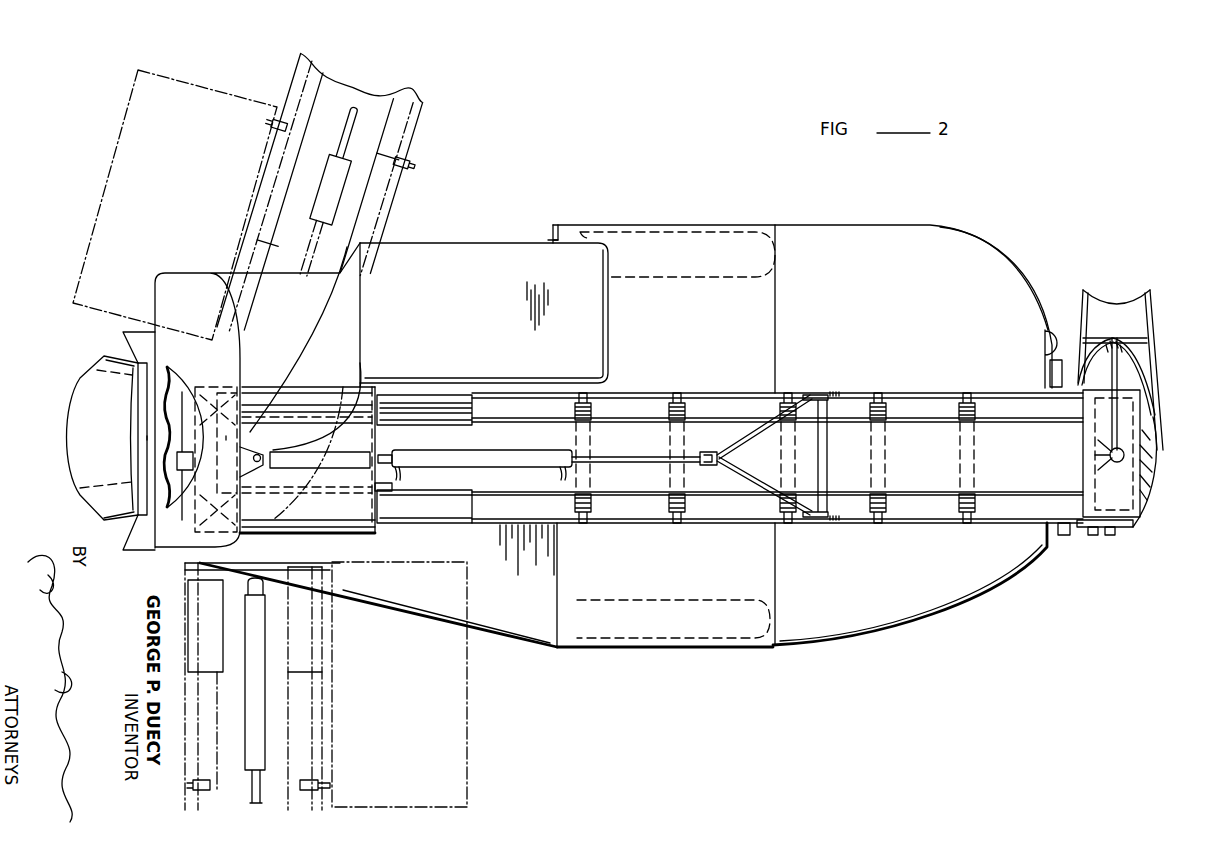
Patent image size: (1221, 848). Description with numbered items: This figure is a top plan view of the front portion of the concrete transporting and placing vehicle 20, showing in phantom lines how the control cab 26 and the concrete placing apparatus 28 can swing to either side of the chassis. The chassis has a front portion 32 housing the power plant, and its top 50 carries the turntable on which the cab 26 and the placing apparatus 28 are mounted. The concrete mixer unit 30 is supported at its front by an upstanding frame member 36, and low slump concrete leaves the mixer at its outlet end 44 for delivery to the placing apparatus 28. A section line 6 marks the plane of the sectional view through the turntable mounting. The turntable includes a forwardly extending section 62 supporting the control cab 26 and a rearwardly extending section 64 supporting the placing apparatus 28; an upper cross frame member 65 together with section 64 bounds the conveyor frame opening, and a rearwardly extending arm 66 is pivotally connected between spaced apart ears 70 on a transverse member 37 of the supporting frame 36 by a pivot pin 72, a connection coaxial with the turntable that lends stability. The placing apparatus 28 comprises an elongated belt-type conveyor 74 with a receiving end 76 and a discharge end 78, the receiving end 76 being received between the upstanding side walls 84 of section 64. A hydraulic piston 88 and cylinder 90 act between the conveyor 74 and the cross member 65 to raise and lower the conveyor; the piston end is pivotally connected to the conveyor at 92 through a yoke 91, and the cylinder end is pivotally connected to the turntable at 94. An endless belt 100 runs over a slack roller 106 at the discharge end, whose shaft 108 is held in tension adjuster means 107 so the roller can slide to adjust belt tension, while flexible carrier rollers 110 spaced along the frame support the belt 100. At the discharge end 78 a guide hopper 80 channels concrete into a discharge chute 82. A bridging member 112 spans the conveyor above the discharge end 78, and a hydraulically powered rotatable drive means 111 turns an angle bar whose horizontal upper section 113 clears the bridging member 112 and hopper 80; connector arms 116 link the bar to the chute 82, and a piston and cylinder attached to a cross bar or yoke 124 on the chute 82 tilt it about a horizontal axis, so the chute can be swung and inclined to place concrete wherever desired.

The concrete transporting and placing vehicle 20 is at (711, 193).
The control housing or cab 26 is at (222, 100).
The concrete placing apparatus 28 is at (838, 322).
The concrete mixer unit 30 is at (83, 455).
The front portion 32 is at (960, 266).
The upstanding frame member 36 is at (107, 519).
The transverse member 37 is at (230, 543).
The outlet end 44 is at (135, 422).
The section line 6 is at (187, 428).
The top of the chassis 50 is at (515, 608).
The forwardly extending section 62 is at (548, 237).
The rearwardly extending section 64 is at (397, 530).
The upper cross frame member 65 is at (392, 487).
The rearwardly extending flange or arm 66 is at (357, 420).
The spaced apart ears 70 is at (247, 450).
The pivot pin 72 is at (260, 477).
The belt-type conveyor 74 is at (713, 384).
The receiving end 76 is at (432, 393).
The discharge end 78 is at (1067, 535).
The guide hopper 80 is at (1148, 477).
The discharge chute 82 is at (1152, 328).
The upstanding side walls 84 is at (327, 385).
The hydraulic piston 88 is at (633, 445).
The hydraulic cylinder 90 is at (500, 449).
The yoke 91 is at (767, 432).
The pivotal connection 92 is at (818, 392).
The pivotal connection 94 is at (393, 455).
The endless belt 100 is at (1017, 507).
The slack roller 106 is at (1138, 513).
The tension adjuster means 107 is at (1093, 535).
The shaft 108 is at (1110, 535).
The flexible carrier rollers 110 is at (888, 405).
The rotatable drive means 111 is at (1120, 458).
The bridging member 112 is at (1095, 432).
The upper section 113 is at (1113, 376).
The connector arms 116 is at (1078, 360).
The cross bar or yoke 124 is at (1128, 338).